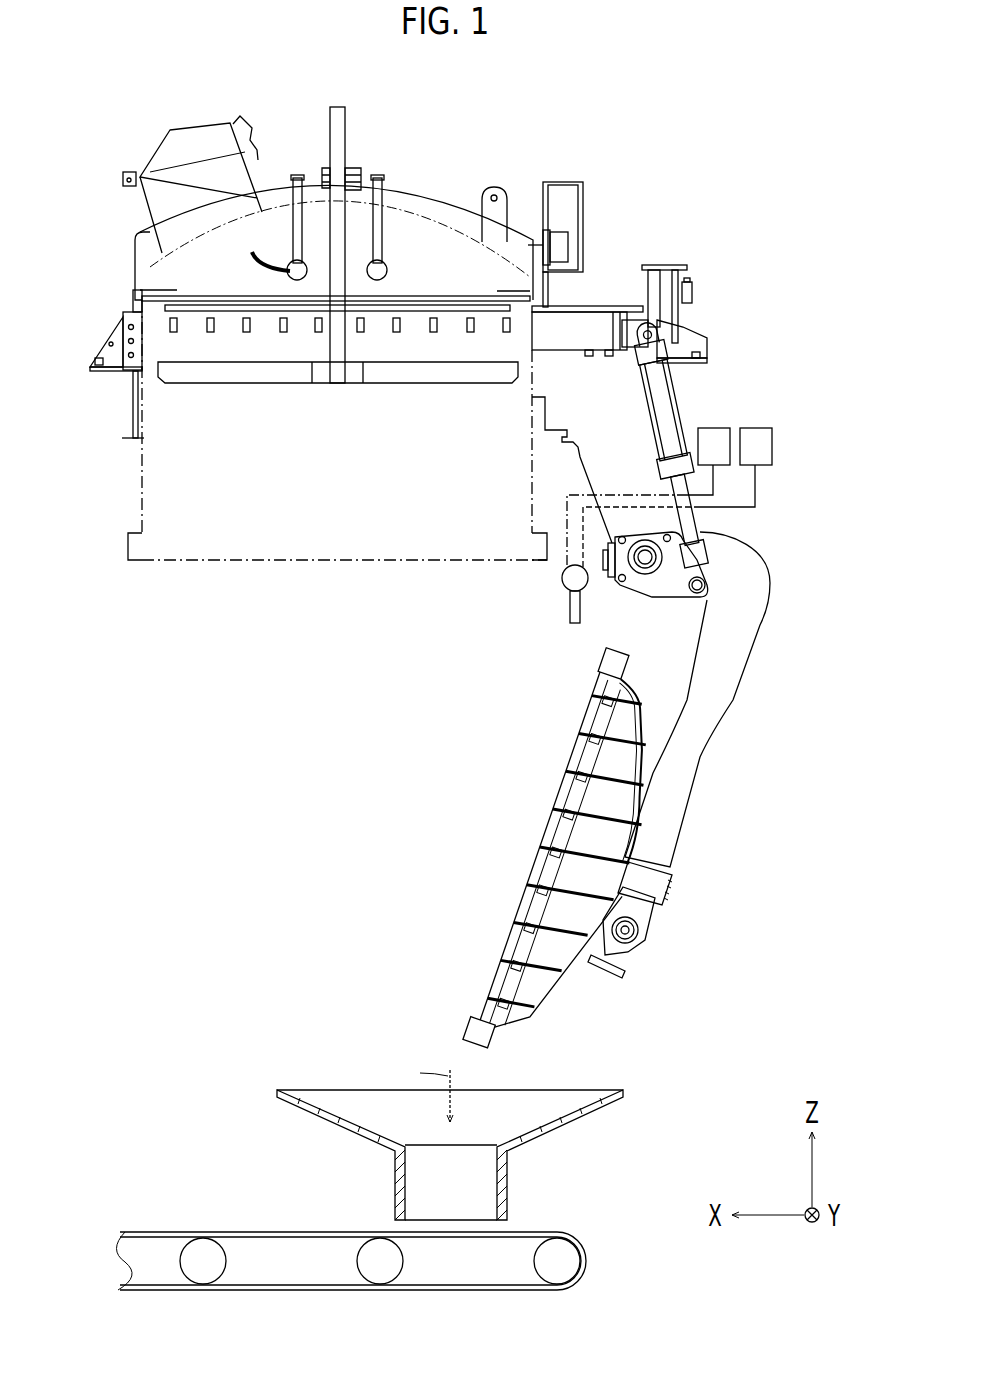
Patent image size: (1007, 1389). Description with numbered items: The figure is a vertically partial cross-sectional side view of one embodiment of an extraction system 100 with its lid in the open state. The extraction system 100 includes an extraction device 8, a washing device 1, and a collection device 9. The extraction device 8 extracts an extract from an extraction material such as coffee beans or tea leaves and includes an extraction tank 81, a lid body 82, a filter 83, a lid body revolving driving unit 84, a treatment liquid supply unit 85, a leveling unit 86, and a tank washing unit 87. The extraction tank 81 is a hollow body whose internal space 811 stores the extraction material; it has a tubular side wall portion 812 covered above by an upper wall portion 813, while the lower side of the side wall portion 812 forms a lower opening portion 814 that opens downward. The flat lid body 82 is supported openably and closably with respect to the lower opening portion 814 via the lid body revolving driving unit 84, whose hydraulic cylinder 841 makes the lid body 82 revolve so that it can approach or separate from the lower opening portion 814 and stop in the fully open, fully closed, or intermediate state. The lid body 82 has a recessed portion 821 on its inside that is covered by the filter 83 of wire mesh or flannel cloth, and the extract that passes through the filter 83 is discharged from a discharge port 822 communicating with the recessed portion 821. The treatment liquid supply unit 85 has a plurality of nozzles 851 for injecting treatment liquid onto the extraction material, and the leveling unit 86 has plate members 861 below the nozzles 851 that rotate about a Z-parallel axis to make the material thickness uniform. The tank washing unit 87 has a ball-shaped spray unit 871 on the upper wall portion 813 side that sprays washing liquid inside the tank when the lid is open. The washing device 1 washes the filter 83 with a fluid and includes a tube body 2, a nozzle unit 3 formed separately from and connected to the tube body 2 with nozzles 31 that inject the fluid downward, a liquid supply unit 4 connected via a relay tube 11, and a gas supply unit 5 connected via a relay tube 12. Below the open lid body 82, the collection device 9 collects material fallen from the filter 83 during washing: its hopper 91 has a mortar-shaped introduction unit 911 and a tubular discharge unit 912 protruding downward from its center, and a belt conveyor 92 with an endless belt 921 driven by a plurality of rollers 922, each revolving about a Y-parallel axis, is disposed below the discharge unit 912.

The extraction system 100 is at (783, 153).
The washing device 1 is at (793, 433).
The relay tube 11 is at (717, 480).
The relay tube 12 is at (760, 488).
The tube body 2 is at (562, 582).
The nozzle unit 3 is at (568, 614).
The nozzle 31 is at (575, 630).
The liquid supply unit 4 is at (713, 427).
The gas supply unit 5 is at (757, 427).
The extraction device 8 is at (632, 205).
The extraction tank 81 is at (135, 477).
The internal space 811 is at (362, 473).
The side wall portion 812 is at (138, 519).
The upper wall portion 813 is at (268, 178).
The lower opening portion 814 is at (268, 568).
The lid body 82 is at (547, 1000).
The recessed portion 821 is at (613, 817).
The discharge port 822 is at (670, 885).
The filter 83 is at (515, 900).
The lid body revolving driving unit 84 is at (708, 322).
The hydraulic cylinder 841 is at (673, 393).
The treatment liquid supply unit 85 is at (432, 280).
The leveling unit 86 is at (443, 340).
The nozzle 851 is at (243, 333).
The plate member 861 is at (265, 378).
The tank washing unit 87 is at (392, 212).
The spray unit 871 is at (288, 266).
The collection device 9 is at (637, 1060).
The hopper 91 is at (163, 1098).
The introduction unit 911 is at (395, 1147).
The discharge unit 912 is at (395, 1220).
The belt conveyor 92 is at (570, 1217).
The endless belt 921 is at (140, 1232).
The roller 922 is at (226, 1262).